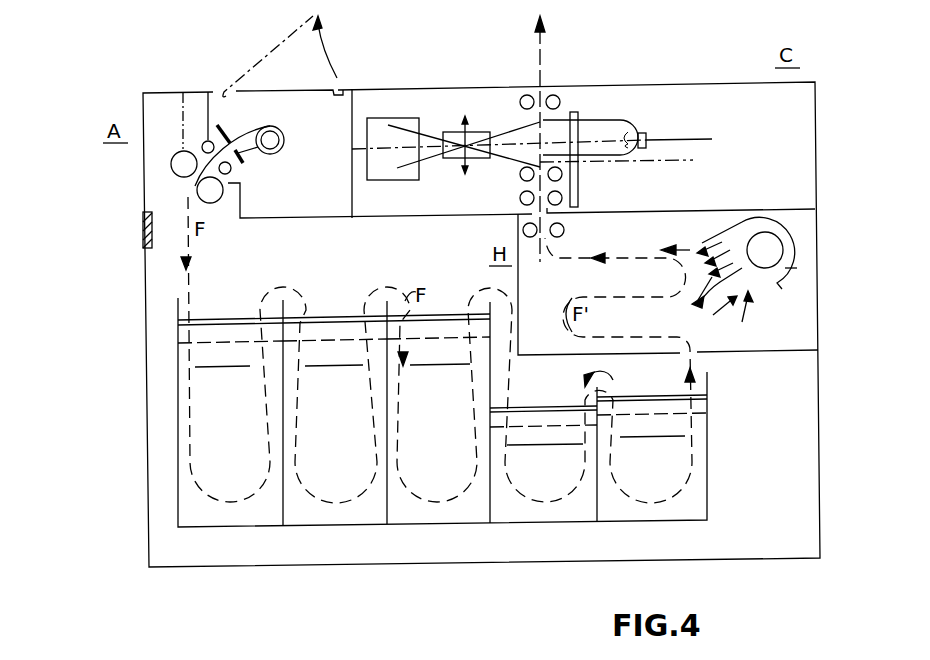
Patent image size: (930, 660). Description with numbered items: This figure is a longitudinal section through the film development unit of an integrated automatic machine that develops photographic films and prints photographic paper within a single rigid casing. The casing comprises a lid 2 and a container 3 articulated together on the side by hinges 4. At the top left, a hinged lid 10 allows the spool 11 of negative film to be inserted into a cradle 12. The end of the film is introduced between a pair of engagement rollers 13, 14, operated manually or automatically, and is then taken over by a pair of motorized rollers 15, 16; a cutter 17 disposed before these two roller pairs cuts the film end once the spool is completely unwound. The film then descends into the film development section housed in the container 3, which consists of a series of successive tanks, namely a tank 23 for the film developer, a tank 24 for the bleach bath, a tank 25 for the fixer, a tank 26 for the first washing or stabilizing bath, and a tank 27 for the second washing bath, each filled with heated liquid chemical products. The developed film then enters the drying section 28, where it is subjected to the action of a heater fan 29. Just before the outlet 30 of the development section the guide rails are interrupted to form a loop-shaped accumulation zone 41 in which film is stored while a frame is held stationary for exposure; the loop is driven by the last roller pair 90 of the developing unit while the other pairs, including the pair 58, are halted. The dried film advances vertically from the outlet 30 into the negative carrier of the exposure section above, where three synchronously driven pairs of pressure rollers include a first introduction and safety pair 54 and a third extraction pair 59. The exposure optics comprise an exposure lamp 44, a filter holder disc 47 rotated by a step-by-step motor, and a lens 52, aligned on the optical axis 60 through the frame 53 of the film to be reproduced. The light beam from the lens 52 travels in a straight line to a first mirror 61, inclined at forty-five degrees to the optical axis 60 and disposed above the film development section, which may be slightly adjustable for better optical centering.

The lid 2 is at (143, 110).
The container 3 is at (147, 438).
The hinges 4 is at (143, 234).
The hinged lid 10 is at (288, 40).
The spool 11 is at (272, 138).
The cradle 12 is at (285, 140).
The engagement roller 13 is at (232, 170).
The engagement roller 14 is at (207, 140).
The motorized roller 15 is at (218, 200).
The motorized roller 16 is at (171, 164).
The cutter 17 is at (222, 130).
The film developer tank 23 is at (213, 510).
The bleach bath tank 24 is at (322, 510).
The fixer tank 25 is at (425, 508).
The first washing bath tank 26 is at (545, 508).
The second washing bath tank 27 is at (648, 505).
The drying section 28 is at (783, 326).
The heater fan 29 is at (795, 265).
The outlet slot 30 is at (565, 232).
The loop-shaped accumulation zone 41 is at (545, 82).
The exposure lamp 44 is at (630, 130).
The filter holder disc 47 is at (578, 182).
The lens 52 is at (472, 134).
The frame of the film 53 is at (545, 133).
The first introduction and safety roller pair 54 is at (521, 201).
The roller pair 58 is at (529, 182).
The third extraction roller pair 59 is at (556, 97).
The optical axis 60 is at (695, 139).
The first mirror 61 is at (400, 120).
The last roller pair of the developing unit 90 is at (531, 238).